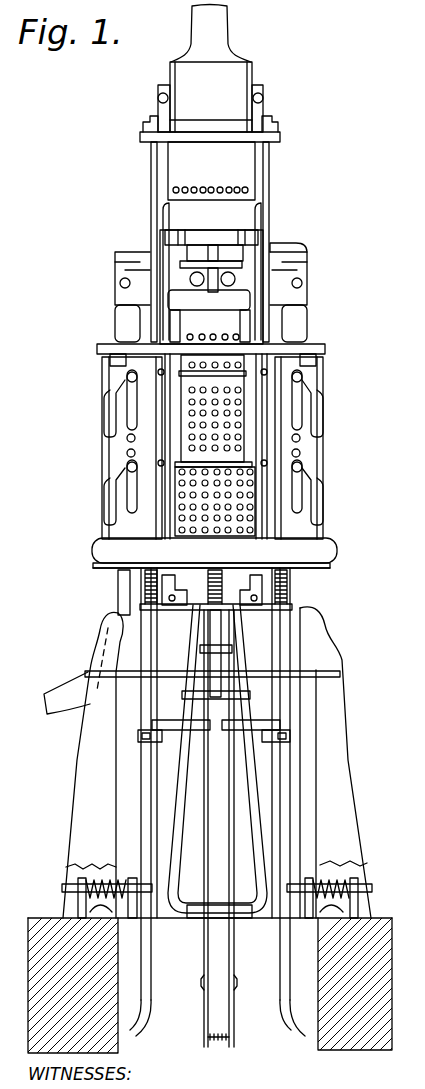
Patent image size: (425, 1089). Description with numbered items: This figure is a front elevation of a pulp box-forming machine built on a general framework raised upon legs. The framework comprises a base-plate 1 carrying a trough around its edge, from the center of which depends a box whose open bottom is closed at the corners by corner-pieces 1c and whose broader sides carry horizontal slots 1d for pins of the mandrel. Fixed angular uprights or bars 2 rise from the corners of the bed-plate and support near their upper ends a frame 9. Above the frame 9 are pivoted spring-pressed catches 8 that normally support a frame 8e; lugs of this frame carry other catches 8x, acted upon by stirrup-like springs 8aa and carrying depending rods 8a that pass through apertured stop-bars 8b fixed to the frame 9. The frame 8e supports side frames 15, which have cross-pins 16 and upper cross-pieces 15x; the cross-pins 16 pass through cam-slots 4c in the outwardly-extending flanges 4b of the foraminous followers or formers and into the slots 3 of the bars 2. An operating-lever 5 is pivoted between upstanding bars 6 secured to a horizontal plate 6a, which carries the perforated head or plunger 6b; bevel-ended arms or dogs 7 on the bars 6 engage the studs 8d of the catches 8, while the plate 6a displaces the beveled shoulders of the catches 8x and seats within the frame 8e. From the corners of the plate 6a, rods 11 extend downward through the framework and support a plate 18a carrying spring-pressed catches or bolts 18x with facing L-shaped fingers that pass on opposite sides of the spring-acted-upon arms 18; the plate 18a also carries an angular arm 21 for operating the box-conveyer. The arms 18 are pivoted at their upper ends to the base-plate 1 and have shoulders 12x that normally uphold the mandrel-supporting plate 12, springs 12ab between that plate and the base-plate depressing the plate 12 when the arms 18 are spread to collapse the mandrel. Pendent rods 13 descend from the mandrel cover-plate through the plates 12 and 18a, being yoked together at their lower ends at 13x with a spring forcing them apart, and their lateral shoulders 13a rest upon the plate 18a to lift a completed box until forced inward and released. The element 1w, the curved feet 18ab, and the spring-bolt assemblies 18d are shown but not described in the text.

The base-plate 1 is at (257, 547).
The plate edge 1w is at (100, 564).
The corner-pieces 1c is at (292, 596).
The horizontal slots 1d is at (310, 574).
The angular uprights or bars 2 is at (127, 448).
The slots 3 is at (298, 408).
The outwardly-extending flanges or extensions 4b is at (104, 432).
The cam-slots 4c is at (108, 400).
The operating-lever 5 is at (211, 97).
The upstanding bars 6 is at (158, 104).
The horizontal plate 6a is at (270, 133).
The head or plunger 6b is at (240, 170).
The bevel-ended arms or dogs 7 is at (264, 115).
The spring-pressed catches 8 is at (143, 251).
The depending rods 8a is at (295, 313).
The stirrup-like springs 8aa is at (300, 255).
The apertured stop-bars 8b is at (318, 368).
The studs 8d is at (163, 230).
The frame 8e is at (238, 256).
The catches 8x is at (150, 238).
The frame 9 is at (312, 347).
The rods 11 is at (130, 530).
The mandrel-supporting plate 12 is at (198, 596).
The springs 12ab is at (150, 588).
The shoulders 12x is at (116, 616).
The pendent rods 13 is at (231, 834).
The lateral offsets or shoulders 13a is at (203, 986).
The yoke 13x is at (219, 1042).
The frames 15 is at (282, 422).
The upper cross-pieces 15x is at (182, 305).
The cross-pins 16 is at (118, 483).
The spring-acted-upon bars or arms 18 is at (147, 805).
The plate 18a is at (282, 726).
The feet 18ab is at (217, 1025).
The spring bolt 18d is at (333, 876).
The spring-pressed catches or bolts 18x is at (138, 736).
The angular arm 21 is at (210, 649).